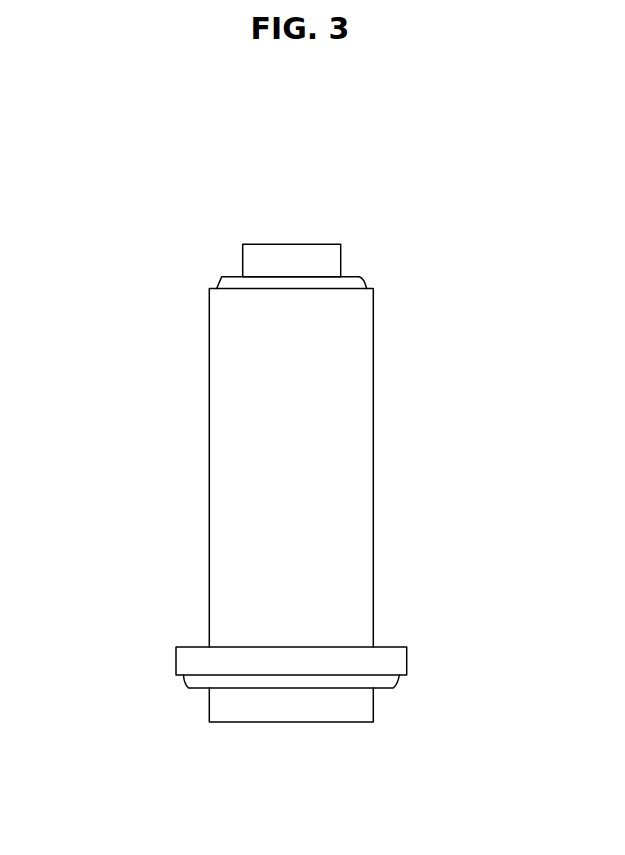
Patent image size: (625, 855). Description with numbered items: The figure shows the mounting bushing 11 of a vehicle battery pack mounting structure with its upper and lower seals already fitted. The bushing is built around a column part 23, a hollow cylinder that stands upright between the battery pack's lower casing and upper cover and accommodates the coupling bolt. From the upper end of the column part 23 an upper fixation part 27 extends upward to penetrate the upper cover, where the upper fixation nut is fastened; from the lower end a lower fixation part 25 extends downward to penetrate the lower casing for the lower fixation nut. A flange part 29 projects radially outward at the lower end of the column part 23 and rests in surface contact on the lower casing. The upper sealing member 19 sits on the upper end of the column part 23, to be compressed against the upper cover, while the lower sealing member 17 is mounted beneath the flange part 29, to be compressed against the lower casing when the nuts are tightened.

The mounting bushing 11 is at (184, 482).
The lower sealing member 17 is at (387, 683).
The upper sealing member 19 is at (360, 278).
The column part 23 is at (351, 453).
The lower fixation part 25 is at (344, 715).
The upper fixation part 27 is at (323, 244).
The flange part 29 is at (398, 661).